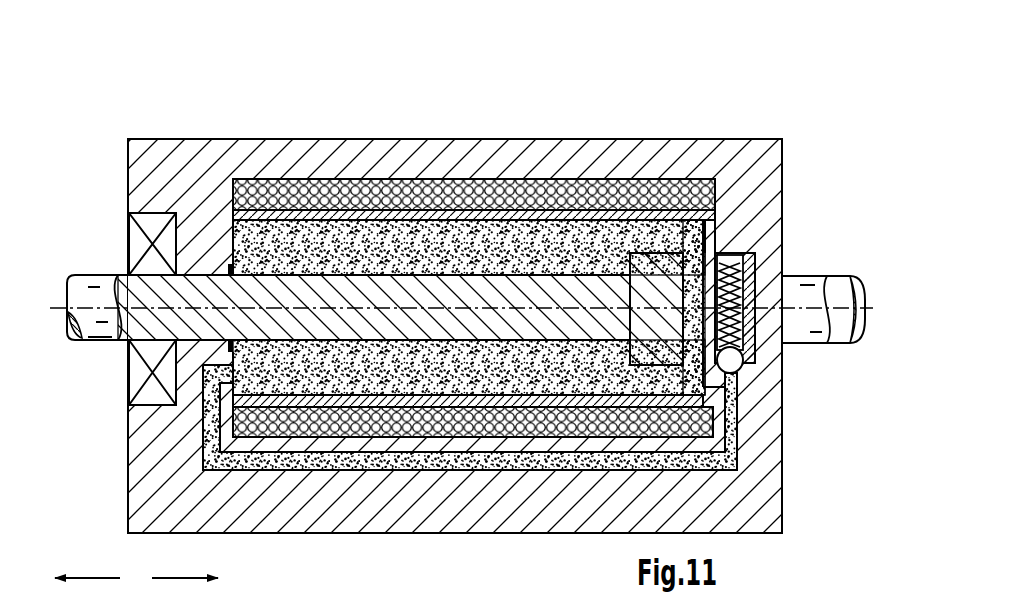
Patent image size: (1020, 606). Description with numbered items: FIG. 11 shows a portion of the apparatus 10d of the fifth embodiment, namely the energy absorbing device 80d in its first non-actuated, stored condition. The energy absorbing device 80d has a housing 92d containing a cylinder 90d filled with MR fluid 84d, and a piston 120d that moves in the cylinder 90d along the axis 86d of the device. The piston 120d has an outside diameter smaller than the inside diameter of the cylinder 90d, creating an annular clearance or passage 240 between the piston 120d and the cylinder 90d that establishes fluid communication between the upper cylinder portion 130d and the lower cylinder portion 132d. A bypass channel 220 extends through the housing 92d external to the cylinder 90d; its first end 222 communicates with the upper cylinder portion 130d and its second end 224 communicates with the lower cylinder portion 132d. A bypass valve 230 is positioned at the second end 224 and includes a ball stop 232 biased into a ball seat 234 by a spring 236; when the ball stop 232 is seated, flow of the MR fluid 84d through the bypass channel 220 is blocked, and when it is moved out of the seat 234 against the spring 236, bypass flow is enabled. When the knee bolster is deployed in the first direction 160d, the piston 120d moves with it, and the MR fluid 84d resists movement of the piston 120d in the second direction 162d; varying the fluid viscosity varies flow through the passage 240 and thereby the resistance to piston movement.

The apparatus 10d is at (170, 112).
The energy absorbing device 80d is at (235, 70).
The housing 92d is at (356, 160).
The MR fluid 84d is at (305, 250).
The upper cylinder portion 130d is at (420, 252).
The cylinder 90d is at (491, 195).
The passage 240 is at (660, 265).
The piston 120d is at (690, 270).
The lower cylinder portion 132d is at (718, 190).
The spring 236 is at (747, 254).
The axis 86d is at (805, 308).
The bypass valve 230 is at (762, 356).
The ball stop 232 is at (735, 362).
The ball seat 234 is at (733, 370).
The second end 224 is at (732, 375).
The first end 222 is at (232, 372).
The bypass channel 220 is at (487, 460).
The first direction 160d is at (87, 564).
The second direction 162d is at (183, 564).